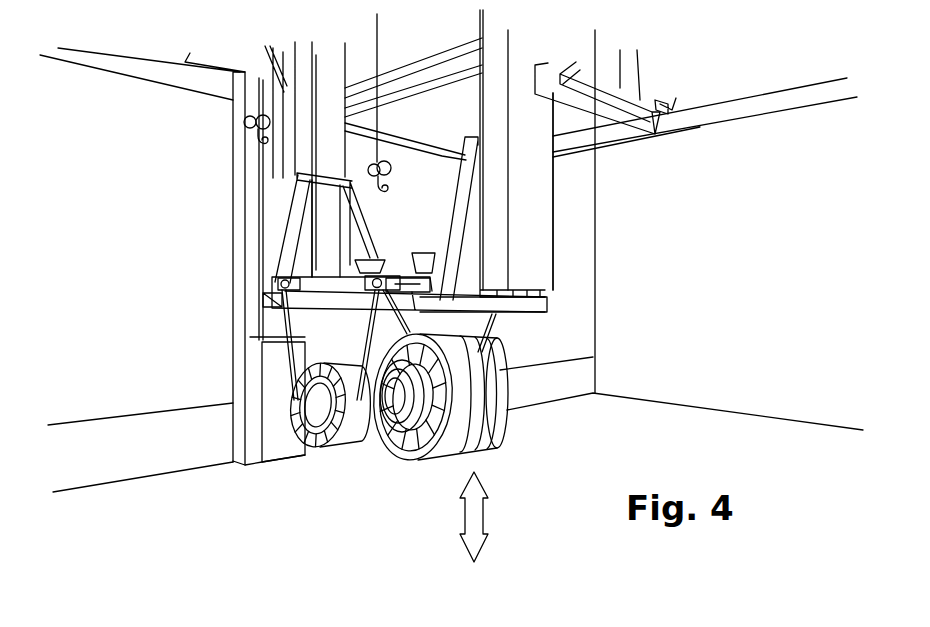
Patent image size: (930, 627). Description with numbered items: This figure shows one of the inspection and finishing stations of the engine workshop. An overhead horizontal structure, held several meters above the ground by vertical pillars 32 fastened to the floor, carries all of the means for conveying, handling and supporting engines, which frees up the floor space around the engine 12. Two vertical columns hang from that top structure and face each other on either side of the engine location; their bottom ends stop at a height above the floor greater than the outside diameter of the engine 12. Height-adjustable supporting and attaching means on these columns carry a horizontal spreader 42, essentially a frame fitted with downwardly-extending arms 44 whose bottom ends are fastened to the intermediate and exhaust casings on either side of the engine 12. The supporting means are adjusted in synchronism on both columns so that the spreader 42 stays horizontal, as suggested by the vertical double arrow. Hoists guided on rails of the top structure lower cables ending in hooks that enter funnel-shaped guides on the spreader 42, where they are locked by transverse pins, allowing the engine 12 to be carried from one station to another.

The engine 12 is at (498, 418).
The vertical pillars 32 is at (240, 200).
The horizontal spreader 42 is at (403, 268).
The downwardly-extending arms 44 is at (262, 325).